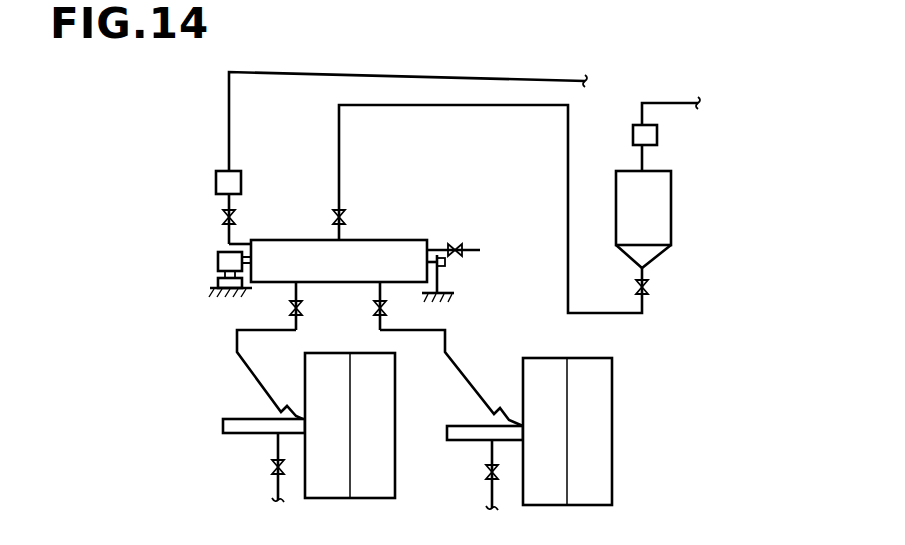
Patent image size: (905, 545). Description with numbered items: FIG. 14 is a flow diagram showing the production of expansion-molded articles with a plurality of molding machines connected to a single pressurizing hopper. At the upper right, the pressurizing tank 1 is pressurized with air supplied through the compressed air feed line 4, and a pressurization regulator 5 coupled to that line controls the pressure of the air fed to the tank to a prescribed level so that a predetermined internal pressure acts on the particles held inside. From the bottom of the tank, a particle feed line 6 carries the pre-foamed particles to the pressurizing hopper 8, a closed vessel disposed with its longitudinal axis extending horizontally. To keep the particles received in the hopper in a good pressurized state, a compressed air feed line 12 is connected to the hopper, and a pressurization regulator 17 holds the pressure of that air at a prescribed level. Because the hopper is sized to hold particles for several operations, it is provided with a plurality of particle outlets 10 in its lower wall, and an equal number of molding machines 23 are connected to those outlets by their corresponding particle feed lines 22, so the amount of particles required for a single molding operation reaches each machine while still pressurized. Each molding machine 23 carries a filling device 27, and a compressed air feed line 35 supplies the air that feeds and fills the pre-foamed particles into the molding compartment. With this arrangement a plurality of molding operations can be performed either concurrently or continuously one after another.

The pressurizing tank 1 is at (671, 196).
The compressed air feed line 4 is at (667, 103).
The pressurization regulator 5 is at (657, 137).
The particle feed line 6 is at (568, 142).
The pressurizing hopper 8 is at (399, 240).
The particle outlets 10 is at (296, 288).
The compressed air feed line 12 is at (229, 128).
The pressurization regulator 17 is at (216, 183).
The particle feed line 22 is at (243, 362).
The molding machine 23 is at (395, 462).
The filling device 27 is at (233, 419).
The compressed air feed line 35 is at (272, 485).